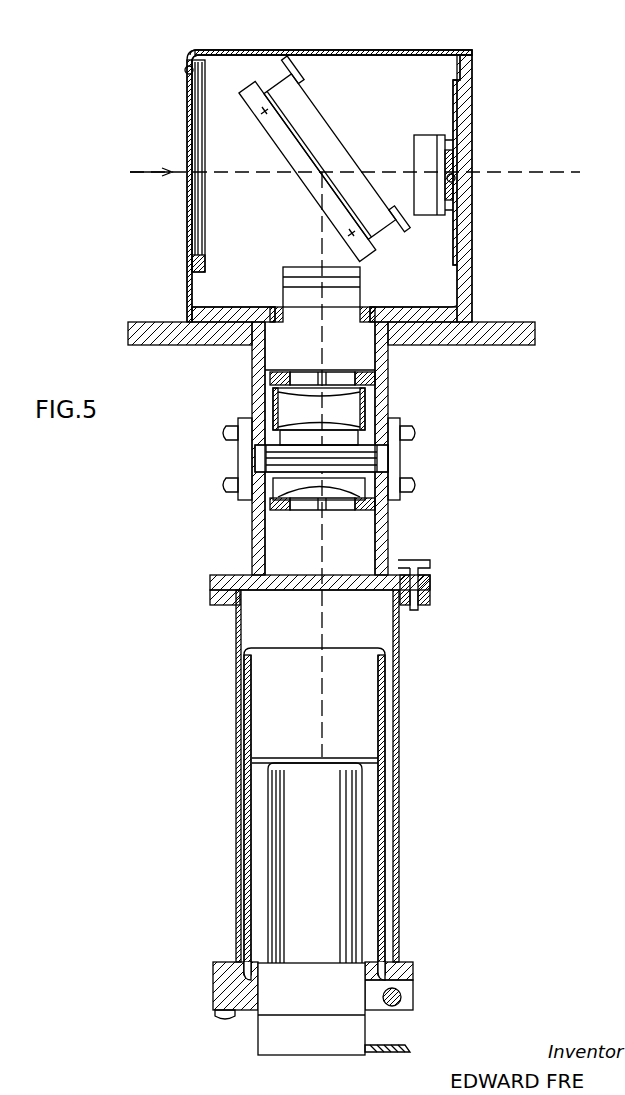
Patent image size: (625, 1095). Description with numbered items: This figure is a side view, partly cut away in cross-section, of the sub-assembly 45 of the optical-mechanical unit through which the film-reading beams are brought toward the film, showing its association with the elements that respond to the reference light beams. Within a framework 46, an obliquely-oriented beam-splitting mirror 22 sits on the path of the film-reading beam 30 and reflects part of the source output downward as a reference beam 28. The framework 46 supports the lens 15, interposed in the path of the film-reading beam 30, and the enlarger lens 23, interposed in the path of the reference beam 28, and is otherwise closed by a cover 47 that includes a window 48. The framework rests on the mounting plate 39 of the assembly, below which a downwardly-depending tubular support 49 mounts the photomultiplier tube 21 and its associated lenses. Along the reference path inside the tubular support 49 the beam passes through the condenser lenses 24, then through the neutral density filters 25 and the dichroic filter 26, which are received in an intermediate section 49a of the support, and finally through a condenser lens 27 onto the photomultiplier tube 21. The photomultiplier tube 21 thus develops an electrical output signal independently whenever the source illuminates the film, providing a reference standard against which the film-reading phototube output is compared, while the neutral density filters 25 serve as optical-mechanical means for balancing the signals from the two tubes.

The lens 15 is at (445, 170).
The photomultiplier tube 21 is at (345, 807).
The beam-splitting mirror 22 is at (333, 155).
The enlarger lens 23 is at (290, 293).
The condenser lenses 24 is at (330, 423).
The neutral density filters 25 is at (277, 463).
The dichroic filter 26 is at (370, 463).
The condenser lens 27 is at (275, 490).
The reference beam 28 is at (322, 228).
The film-reading beam 30 is at (527, 178).
The mounting plate 39 is at (508, 346).
The sub-assembly 45 is at (545, 102).
The framework 46 is at (468, 298).
The cover 47 is at (400, 50).
The window 48 is at (200, 214).
The tubular support 49 is at (262, 368).
The intermediate section 49a is at (398, 453).